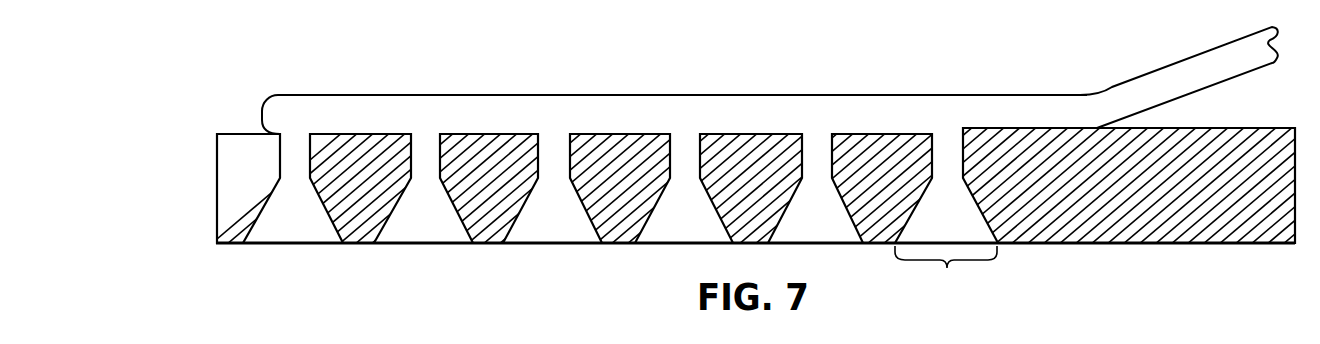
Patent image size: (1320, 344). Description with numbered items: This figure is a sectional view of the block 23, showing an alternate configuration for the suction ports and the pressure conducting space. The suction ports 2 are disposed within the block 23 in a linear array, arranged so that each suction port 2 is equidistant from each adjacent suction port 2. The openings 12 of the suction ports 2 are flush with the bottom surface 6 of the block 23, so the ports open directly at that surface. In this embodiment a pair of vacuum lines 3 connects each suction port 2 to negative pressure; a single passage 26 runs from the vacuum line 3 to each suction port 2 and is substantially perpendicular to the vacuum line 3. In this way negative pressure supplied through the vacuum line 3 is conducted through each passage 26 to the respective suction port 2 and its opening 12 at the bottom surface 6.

The suction port 2 is at (993, 210).
The vacuum line 3 is at (1166, 78).
The bottom surface 6 is at (485, 247).
The opening 12 is at (946, 274).
The block 23 is at (224, 134).
The passage 26 is at (292, 145).